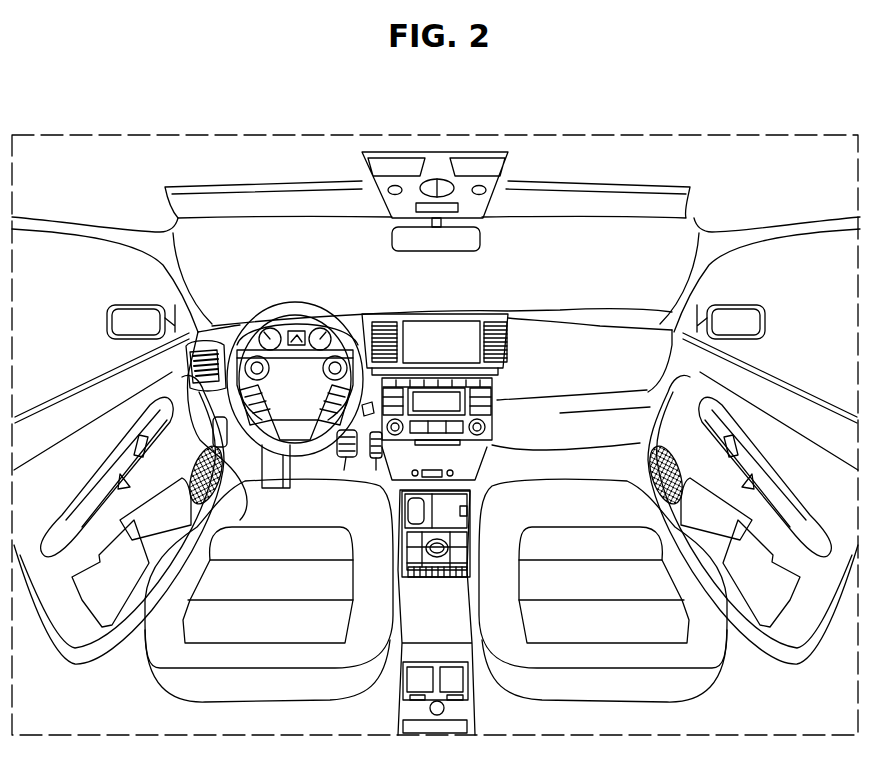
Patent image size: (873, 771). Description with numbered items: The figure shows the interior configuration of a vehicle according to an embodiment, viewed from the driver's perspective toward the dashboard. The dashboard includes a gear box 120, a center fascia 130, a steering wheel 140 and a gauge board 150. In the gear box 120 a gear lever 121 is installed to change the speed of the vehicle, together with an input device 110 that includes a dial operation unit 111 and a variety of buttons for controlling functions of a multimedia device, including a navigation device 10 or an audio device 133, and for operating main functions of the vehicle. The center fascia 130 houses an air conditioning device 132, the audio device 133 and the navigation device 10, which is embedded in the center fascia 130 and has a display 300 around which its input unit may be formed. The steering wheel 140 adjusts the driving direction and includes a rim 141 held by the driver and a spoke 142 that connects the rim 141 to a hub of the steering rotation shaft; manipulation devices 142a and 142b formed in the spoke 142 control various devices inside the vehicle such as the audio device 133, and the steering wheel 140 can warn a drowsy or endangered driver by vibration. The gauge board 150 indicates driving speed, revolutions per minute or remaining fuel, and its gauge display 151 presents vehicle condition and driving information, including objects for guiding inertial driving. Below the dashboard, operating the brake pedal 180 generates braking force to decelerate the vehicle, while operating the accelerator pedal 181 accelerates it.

The navigation device 10 is at (483, 307).
The input device 110 is at (458, 552).
The dial operation unit 111 is at (420, 550).
The gear box 120 is at (424, 612).
The gear lever 121 is at (347, 560).
The center fascia 130 is at (530, 305).
The air conditioning device 132 is at (505, 344).
The audio device 133 is at (495, 393).
The steering wheel 140 is at (295, 342).
The rim 141 is at (273, 303).
The spoke 142 is at (262, 322).
The manipulation device 142a is at (230, 330).
The manipulation device 142b is at (370, 312).
The gauge board 150 is at (304, 322).
The gauge display 151 is at (328, 328).
The brake pedal 180 is at (292, 488).
The accelerator pedal 181 is at (401, 505).
The display 300 is at (448, 322).